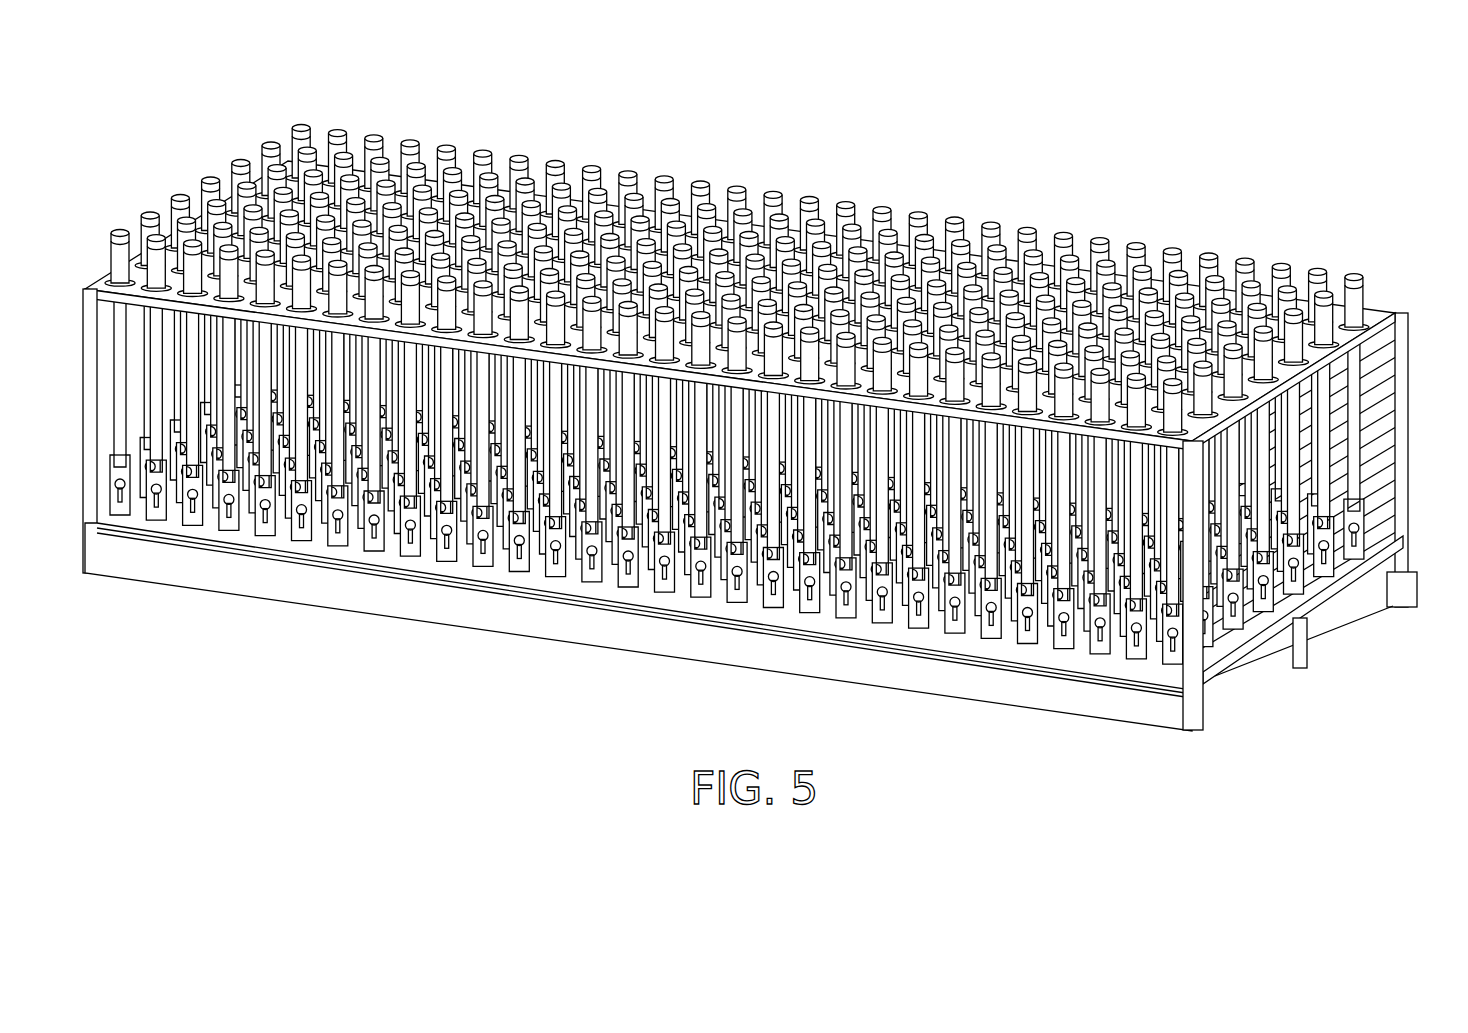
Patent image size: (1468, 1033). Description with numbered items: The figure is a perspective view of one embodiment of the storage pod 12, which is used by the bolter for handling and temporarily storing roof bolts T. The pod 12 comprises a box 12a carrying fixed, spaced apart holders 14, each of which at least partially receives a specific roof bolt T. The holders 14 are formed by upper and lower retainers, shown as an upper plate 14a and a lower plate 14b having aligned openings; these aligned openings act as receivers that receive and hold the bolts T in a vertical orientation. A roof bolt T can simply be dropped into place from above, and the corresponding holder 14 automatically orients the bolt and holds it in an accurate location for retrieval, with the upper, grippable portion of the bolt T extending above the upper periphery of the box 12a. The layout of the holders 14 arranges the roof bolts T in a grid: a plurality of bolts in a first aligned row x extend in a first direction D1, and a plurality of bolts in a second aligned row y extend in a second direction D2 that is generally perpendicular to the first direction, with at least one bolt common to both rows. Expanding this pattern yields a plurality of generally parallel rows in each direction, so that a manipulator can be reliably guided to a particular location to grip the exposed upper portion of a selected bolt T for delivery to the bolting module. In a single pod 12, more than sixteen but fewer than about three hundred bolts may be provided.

The pod 12 is at (763, 457).
The box 12a is at (1108, 690).
The holder 14 is at (1322, 461).
The upper plate 14a is at (1395, 322).
The lower plate 14b is at (1320, 612).
The roof bolt T is at (1280, 266).
The first aligned row x is at (321, 101).
The second aligned row y is at (104, 233).
The first direction D1 is at (788, 727).
The second direction D2 is at (1386, 744).